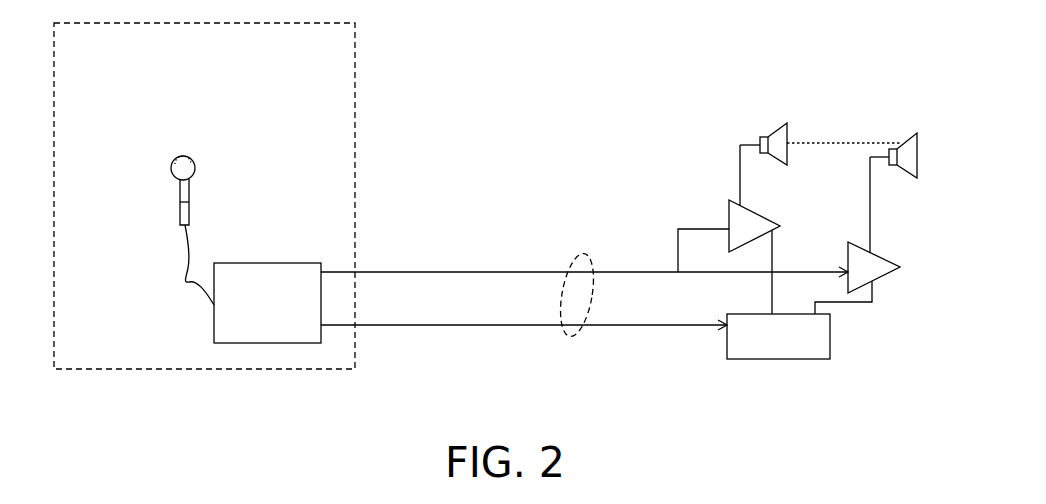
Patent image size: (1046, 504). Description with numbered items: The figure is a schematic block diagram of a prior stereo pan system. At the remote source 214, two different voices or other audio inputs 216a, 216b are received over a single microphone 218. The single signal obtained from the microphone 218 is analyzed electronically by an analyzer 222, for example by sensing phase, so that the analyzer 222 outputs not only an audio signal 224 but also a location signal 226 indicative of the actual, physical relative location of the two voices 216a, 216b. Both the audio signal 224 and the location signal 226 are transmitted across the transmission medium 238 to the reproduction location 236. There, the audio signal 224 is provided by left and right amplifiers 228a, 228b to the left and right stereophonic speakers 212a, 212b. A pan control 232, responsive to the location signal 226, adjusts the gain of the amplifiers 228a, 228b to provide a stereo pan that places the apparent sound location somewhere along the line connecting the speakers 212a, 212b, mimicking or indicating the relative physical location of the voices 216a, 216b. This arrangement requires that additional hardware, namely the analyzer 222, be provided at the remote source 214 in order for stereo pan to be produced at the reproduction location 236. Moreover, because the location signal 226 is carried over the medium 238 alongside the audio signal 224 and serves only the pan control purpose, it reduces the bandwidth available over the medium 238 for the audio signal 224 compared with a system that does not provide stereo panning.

The left stereophonic speaker 212a is at (792, 155).
The right stereophonic speaker 212b is at (902, 142).
The remote source 214 is at (356, 150).
The first voice 216a is at (117, 92).
The second voice 216b is at (277, 83).
The microphone 218 is at (172, 178).
The analyzer 222 is at (237, 344).
The audio signal 224 is at (502, 271).
The location signal 226 is at (513, 326).
The left amplifier 228a is at (729, 218).
The right amplifier 228b is at (848, 258).
The pan control 232 is at (780, 359).
The reproduction location 236 is at (740, 122).
The transmission medium 238 is at (583, 257).